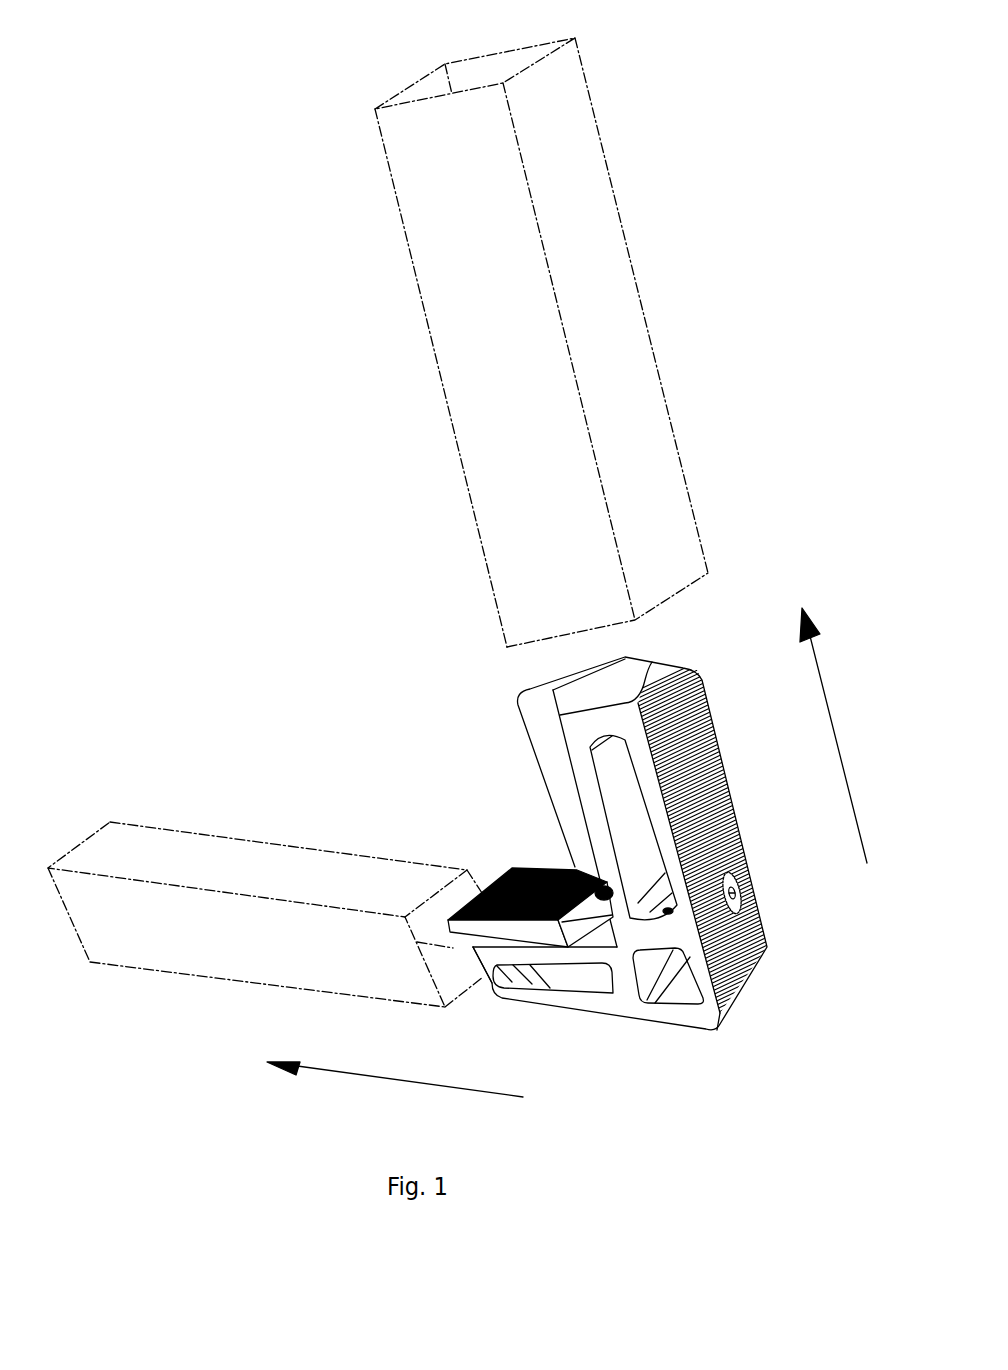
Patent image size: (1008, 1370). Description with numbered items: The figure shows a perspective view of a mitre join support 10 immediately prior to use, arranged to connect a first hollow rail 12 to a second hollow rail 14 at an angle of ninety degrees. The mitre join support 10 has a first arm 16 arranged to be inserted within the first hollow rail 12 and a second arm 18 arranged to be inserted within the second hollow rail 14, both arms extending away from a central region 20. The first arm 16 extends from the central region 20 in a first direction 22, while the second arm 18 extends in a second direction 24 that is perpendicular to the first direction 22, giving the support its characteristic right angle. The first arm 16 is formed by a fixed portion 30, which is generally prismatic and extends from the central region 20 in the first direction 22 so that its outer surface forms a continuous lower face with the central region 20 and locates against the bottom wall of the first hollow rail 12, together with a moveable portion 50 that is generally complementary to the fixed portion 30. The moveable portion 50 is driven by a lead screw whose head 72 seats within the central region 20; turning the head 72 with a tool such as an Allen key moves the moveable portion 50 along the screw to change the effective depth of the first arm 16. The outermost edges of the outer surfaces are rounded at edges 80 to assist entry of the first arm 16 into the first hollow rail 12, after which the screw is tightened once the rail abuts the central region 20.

The mitre join support 10 is at (623, 678).
The first hollow rail 12 is at (215, 845).
The second hollow rail 14 is at (467, 274).
The first arm 16 is at (545, 998).
The second arm 18 is at (710, 735).
The central region 20 is at (713, 1010).
The first direction 22 is at (410, 1082).
The second direction 24 is at (827, 697).
The fixed portion 30 is at (577, 1003).
The moveable portion 50 is at (533, 868).
The head 72 is at (745, 891).
The rounded edges 80 is at (495, 997).